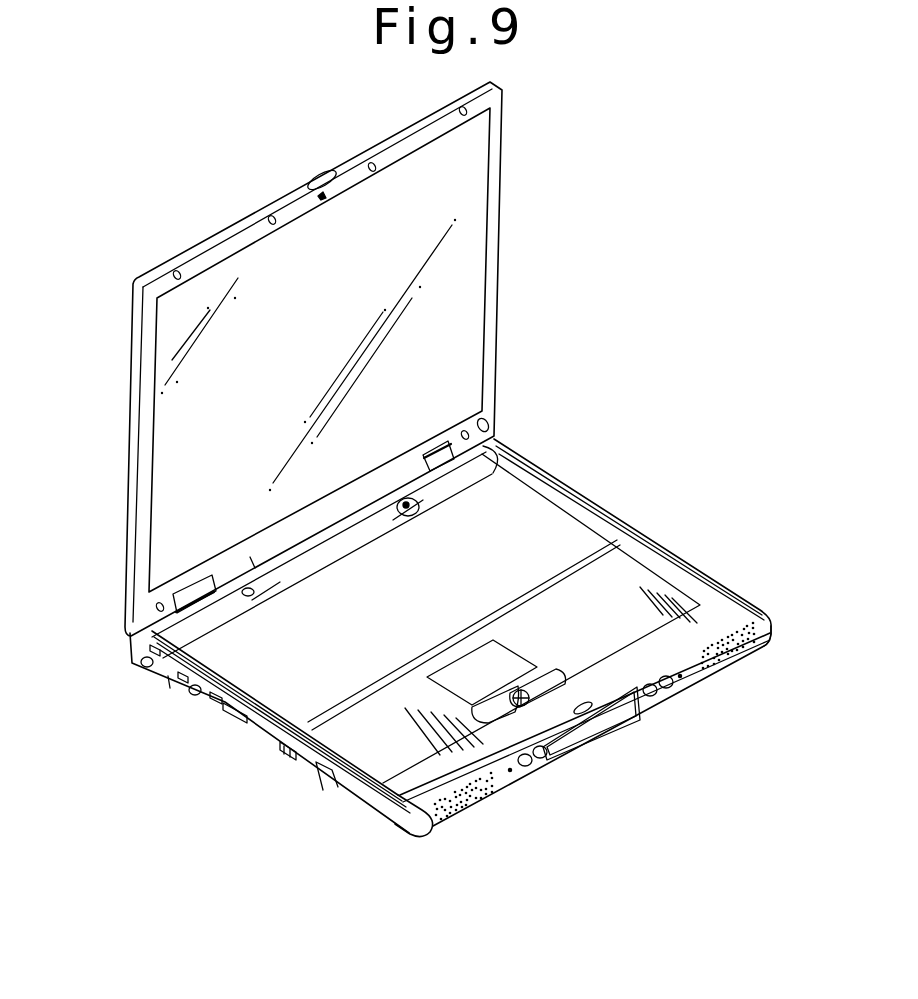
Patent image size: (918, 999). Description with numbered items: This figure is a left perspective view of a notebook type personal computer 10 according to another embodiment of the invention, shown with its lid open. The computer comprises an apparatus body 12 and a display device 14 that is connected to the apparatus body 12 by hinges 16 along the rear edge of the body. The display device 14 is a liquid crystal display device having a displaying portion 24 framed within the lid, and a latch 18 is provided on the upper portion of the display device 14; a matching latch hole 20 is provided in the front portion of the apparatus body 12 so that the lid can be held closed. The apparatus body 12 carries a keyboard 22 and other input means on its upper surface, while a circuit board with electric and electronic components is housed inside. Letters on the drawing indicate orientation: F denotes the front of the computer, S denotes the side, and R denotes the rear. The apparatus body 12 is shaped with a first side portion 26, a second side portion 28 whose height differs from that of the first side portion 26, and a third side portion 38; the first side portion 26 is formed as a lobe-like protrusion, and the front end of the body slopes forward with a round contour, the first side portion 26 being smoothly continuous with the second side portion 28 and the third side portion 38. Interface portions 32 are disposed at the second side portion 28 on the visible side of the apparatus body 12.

The notebook type personal computer 10 is at (612, 176).
The apparatus body 12 is at (633, 575).
The display device 14 is at (495, 157).
The hinges 16 is at (443, 432).
The latch 18 is at (316, 196).
The latch hole 20 is at (582, 714).
The keyboard 22 is at (505, 503).
The displaying portion 24 is at (247, 273).
The first side portion 26 is at (766, 630).
The second side portion 28 is at (585, 500).
The interface portions 32 is at (147, 665).
The third side portion 38 is at (318, 757).
The rear R is at (103, 440).
The side S is at (620, 498).
The front F is at (667, 775).